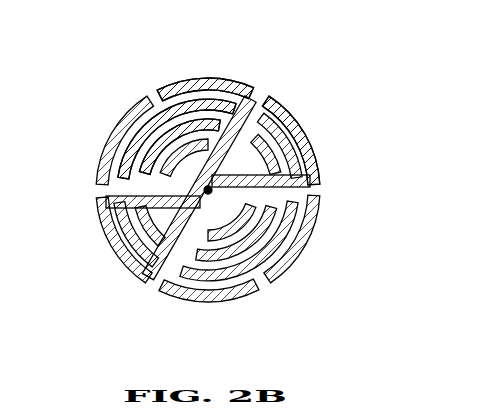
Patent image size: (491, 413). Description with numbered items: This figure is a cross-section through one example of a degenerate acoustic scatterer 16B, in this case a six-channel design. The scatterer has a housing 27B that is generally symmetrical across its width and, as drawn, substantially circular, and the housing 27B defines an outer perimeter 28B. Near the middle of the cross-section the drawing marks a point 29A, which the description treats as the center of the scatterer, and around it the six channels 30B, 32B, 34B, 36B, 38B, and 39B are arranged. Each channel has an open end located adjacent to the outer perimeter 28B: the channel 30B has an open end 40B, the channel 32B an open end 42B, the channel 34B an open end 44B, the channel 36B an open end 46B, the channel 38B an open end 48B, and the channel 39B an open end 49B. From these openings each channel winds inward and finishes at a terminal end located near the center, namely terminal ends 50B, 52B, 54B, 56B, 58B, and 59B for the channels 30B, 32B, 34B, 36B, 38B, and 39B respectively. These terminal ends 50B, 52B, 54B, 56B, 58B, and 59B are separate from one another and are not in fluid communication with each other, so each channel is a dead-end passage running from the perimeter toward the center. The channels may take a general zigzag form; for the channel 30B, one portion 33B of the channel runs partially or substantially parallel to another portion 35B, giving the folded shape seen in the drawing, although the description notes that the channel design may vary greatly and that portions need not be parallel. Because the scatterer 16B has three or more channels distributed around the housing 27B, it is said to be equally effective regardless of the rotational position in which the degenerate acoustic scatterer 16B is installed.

The degenerate acoustic scatterer 16B is at (316, 93).
The housing 27B is at (312, 139).
The perimeter 28B is at (98, 143).
The center axis 29A is at (210, 194).
The channel 30B is at (203, 136).
The channel 32B is at (305, 146).
The portion of channel 33B is at (218, 130).
The channel 34B is at (307, 238).
The portion of channel 35B is at (165, 140).
The channel 36B is at (193, 287).
The channel 38B is at (134, 216).
The channel 39B is at (115, 122).
The open end 40B is at (150, 92).
The open end 42B is at (290, 108).
The open end 44B is at (316, 194).
The open end 46B is at (262, 285).
The open end 48B is at (148, 288).
The open end 49B is at (135, 192).
The terminal end 50B is at (252, 97).
The terminal end 52B is at (302, 182).
The terminal end 54B is at (292, 262).
The terminal end 56B is at (214, 268).
The terminal end 58B is at (114, 237).
The terminal end 59B is at (160, 174).